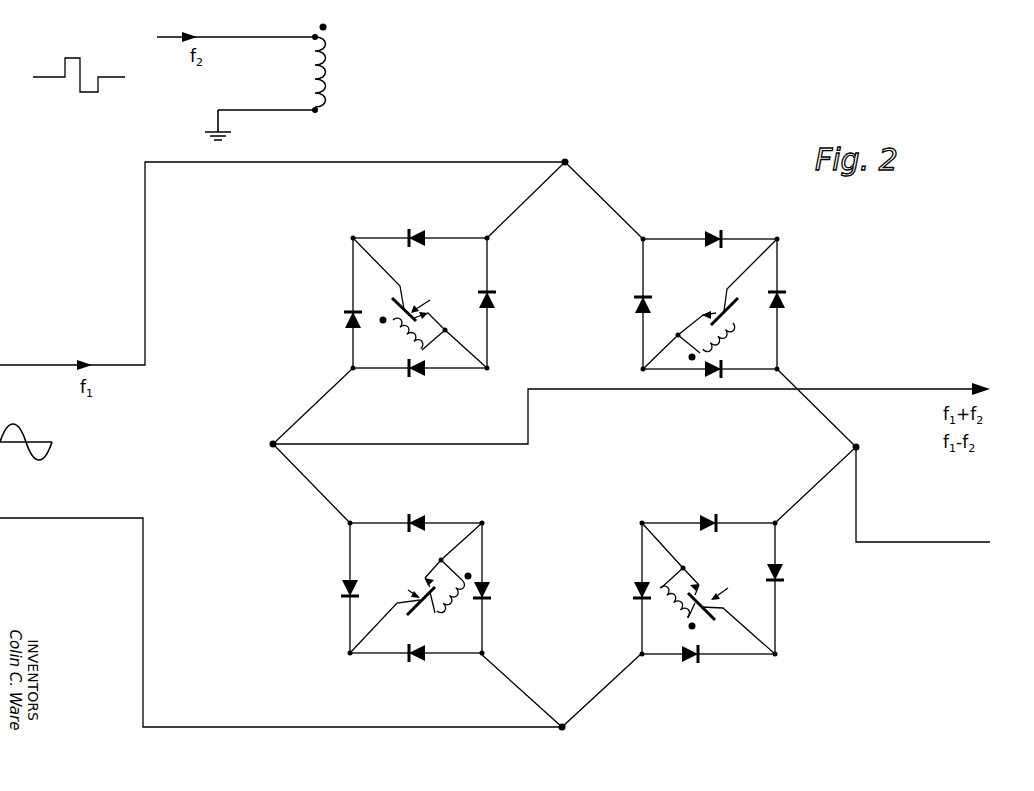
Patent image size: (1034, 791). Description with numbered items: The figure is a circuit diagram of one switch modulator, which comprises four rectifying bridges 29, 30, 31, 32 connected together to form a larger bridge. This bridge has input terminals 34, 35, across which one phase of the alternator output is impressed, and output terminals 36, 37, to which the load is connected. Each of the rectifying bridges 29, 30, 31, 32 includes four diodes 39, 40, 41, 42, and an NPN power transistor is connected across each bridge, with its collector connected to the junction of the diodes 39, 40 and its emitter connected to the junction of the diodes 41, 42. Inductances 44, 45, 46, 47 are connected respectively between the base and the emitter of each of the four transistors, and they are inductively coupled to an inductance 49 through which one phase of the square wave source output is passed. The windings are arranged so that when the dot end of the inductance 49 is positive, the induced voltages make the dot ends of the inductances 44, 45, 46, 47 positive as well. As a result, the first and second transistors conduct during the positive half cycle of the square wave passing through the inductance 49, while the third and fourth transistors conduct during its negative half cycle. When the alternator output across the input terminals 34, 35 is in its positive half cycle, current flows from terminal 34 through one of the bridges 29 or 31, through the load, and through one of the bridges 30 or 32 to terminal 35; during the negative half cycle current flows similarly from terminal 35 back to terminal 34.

The rectifying bridge 29 is at (336, 288).
The rectifying bridge 30 is at (785, 610).
The rectifying bridge 31 is at (798, 277).
The rectifying bridge 32 is at (333, 622).
The input terminal 34 is at (570, 160).
The input terminal 35 is at (560, 705).
The output terminal 36 is at (270, 448).
The output terminal 37 is at (860, 448).
The diode 39 is at (411, 230).
The diode 40 is at (345, 326).
The diode 41 is at (413, 376).
The diode 42 is at (492, 302).
The inductance 44 is at (405, 339).
The inductance 45 is at (672, 602).
The inductance 46 is at (730, 335).
The inductance 47 is at (447, 616).
The inductance 49 is at (327, 88).